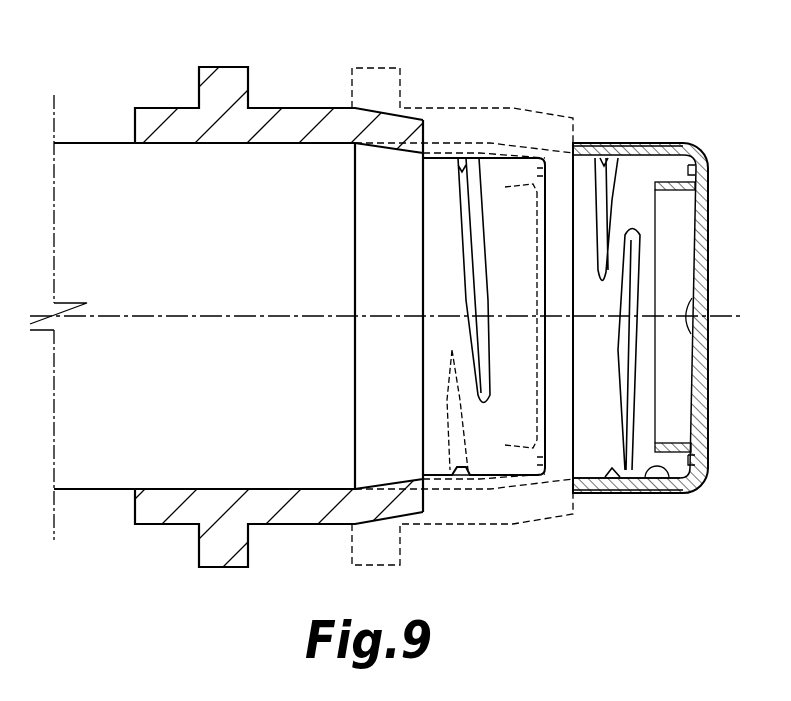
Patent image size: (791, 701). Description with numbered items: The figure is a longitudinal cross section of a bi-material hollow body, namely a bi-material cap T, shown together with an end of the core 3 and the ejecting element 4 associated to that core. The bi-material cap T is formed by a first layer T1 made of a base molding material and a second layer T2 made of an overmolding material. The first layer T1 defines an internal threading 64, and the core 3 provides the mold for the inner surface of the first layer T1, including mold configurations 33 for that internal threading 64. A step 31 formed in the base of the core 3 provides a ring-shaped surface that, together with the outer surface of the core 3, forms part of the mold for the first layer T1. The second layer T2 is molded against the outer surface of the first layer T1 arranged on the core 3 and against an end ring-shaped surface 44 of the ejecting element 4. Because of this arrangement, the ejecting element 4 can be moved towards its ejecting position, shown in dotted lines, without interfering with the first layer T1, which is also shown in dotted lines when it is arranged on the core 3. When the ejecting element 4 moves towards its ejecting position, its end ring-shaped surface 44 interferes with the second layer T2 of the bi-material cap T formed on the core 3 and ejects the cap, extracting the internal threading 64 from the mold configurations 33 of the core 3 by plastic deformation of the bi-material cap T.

The ejecting element 4 is at (298, 115).
The core 3 is at (517, 168).
The mold configurations 33 is at (466, 158).
The step 31 is at (425, 480).
The end ring-shaped surface 44 is at (423, 502).
The bi-material cap T is at (623, 304).
The first layer T1 is at (497, 158).
The second layer T2 is at (632, 488).
The internal threading 64 is at (615, 200).